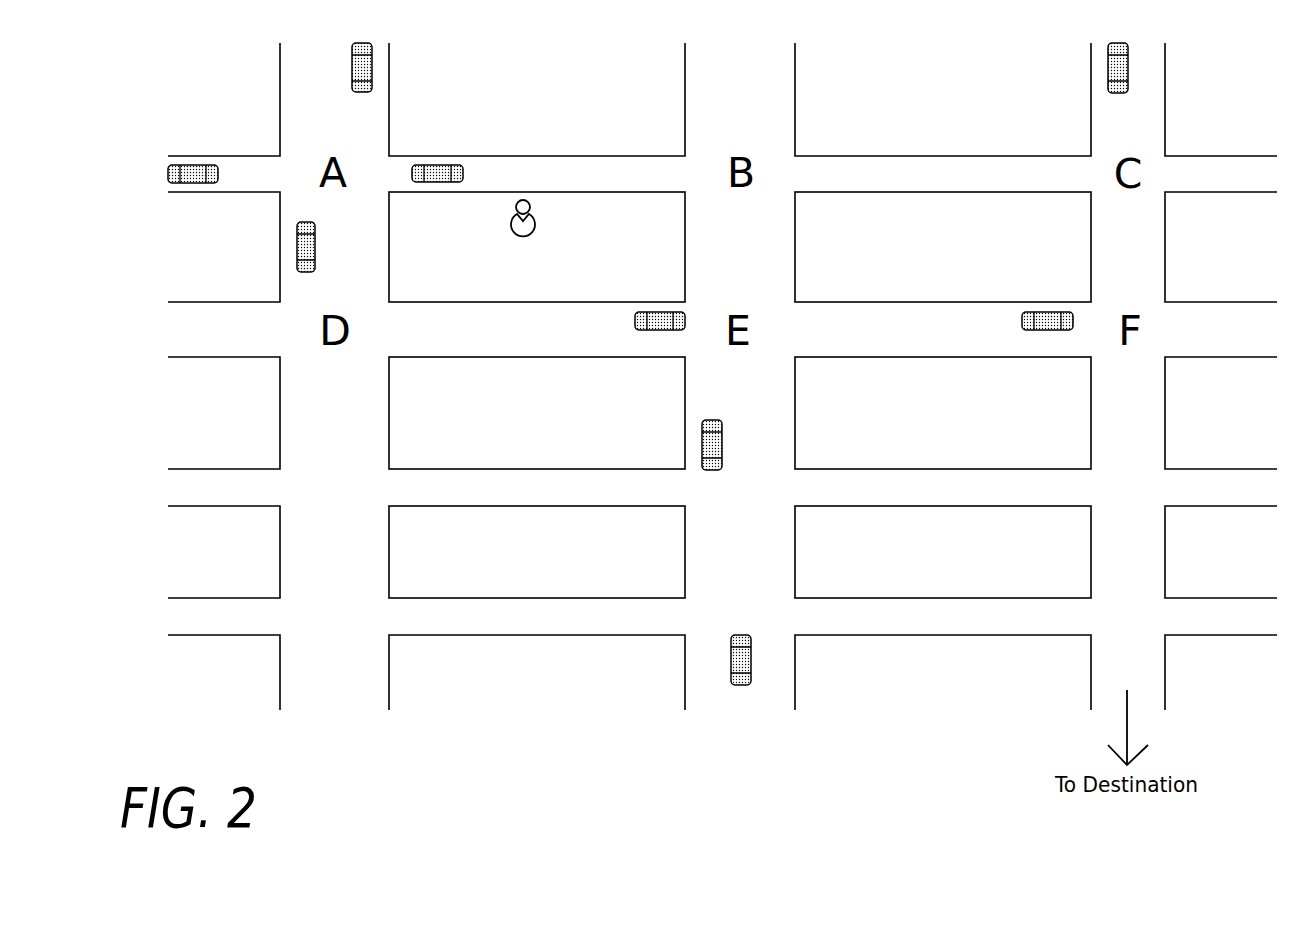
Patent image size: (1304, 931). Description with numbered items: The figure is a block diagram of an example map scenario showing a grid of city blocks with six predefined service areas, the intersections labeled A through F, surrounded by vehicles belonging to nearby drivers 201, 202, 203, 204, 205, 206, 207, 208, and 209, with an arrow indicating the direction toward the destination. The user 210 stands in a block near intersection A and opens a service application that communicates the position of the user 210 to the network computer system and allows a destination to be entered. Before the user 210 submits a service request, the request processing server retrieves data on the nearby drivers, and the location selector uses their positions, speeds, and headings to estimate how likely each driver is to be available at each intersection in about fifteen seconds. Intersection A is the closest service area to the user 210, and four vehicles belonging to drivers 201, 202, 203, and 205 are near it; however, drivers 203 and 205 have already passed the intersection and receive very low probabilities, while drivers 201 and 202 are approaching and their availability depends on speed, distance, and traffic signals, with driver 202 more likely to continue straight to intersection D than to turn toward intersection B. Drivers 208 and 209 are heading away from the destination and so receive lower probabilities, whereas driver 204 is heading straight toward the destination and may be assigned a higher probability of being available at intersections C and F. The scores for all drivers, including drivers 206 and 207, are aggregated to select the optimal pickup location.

The driver 201 is at (168, 174).
The driver 202 is at (352, 62).
The driver 203 is at (444, 165).
The driver 204 is at (1108, 66).
The driver 205 is at (315, 248).
The driver 206 is at (662, 312).
The driver 207 is at (1049, 312).
The driver 208 is at (722, 443).
The driver 209 is at (741, 685).
The user 210 is at (513, 213).